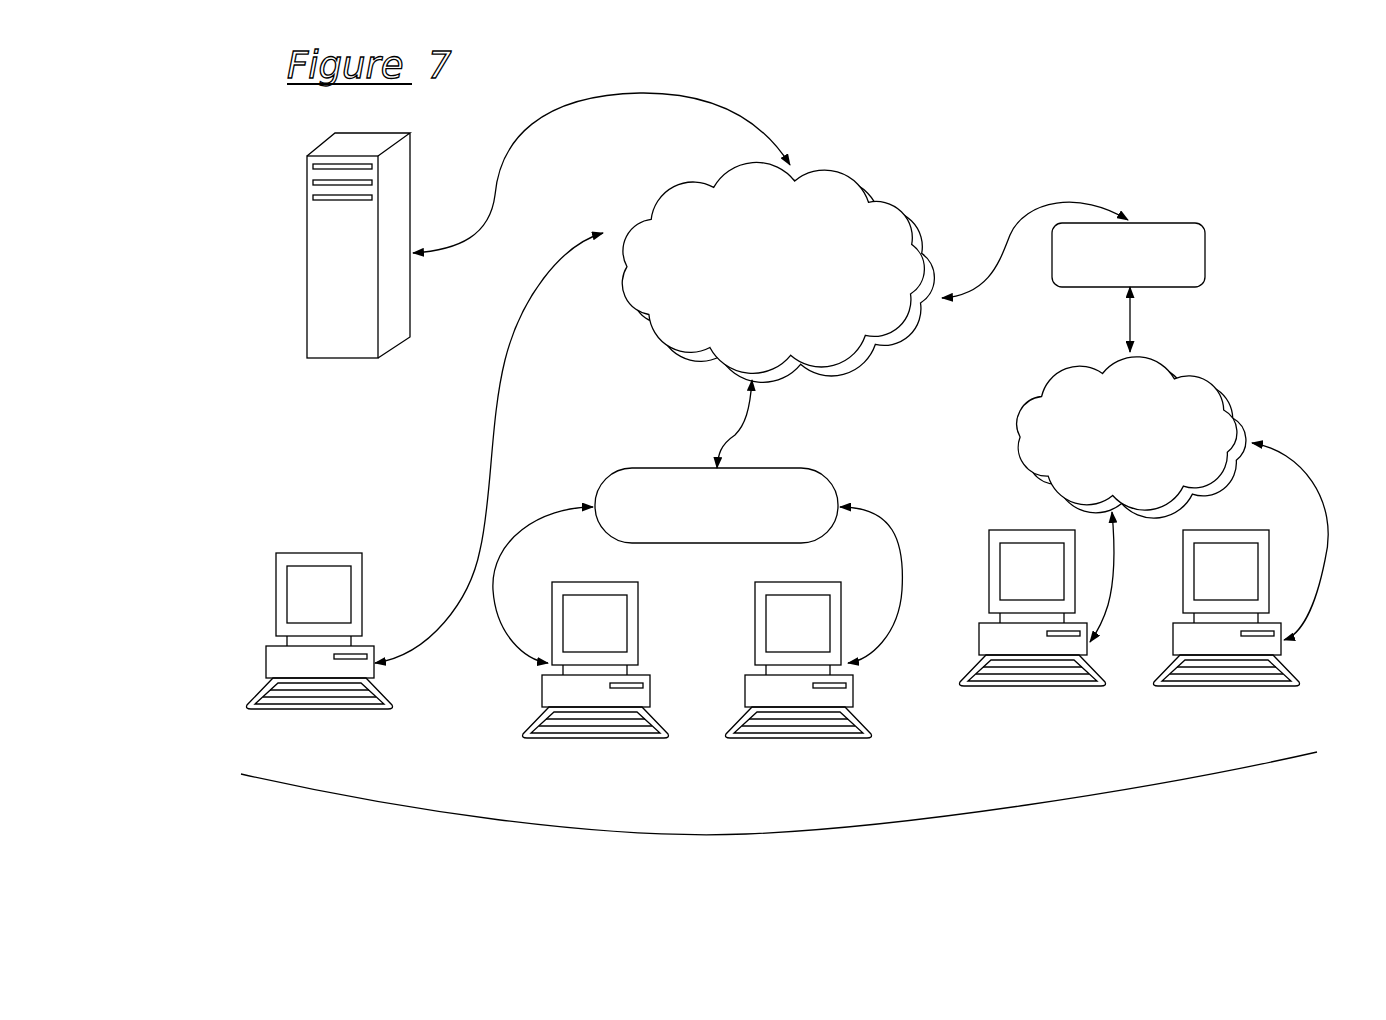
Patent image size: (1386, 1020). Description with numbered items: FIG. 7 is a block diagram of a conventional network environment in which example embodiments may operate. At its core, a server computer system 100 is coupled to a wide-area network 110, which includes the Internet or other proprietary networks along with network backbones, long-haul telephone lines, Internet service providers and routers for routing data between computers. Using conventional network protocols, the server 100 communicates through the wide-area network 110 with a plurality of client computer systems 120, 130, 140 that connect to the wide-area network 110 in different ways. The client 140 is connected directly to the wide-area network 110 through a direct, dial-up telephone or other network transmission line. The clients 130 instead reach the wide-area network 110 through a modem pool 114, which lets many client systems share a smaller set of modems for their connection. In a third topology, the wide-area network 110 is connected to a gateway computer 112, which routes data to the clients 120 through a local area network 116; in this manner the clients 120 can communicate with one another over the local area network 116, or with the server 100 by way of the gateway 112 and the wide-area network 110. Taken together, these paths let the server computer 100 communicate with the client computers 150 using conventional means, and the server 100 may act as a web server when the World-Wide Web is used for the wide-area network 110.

The server computer system 100 is at (305, 165).
The wide-area network 110 is at (845, 168).
The gateway computer 112 is at (1170, 222).
The modem pool 114 is at (683, 465).
The local area network 116 is at (1195, 355).
The client computer systems 120 is at (1018, 530).
The client computer systems 130 is at (542, 687).
The client computer system 140 is at (317, 542).
The client computers 150 is at (779, 822).